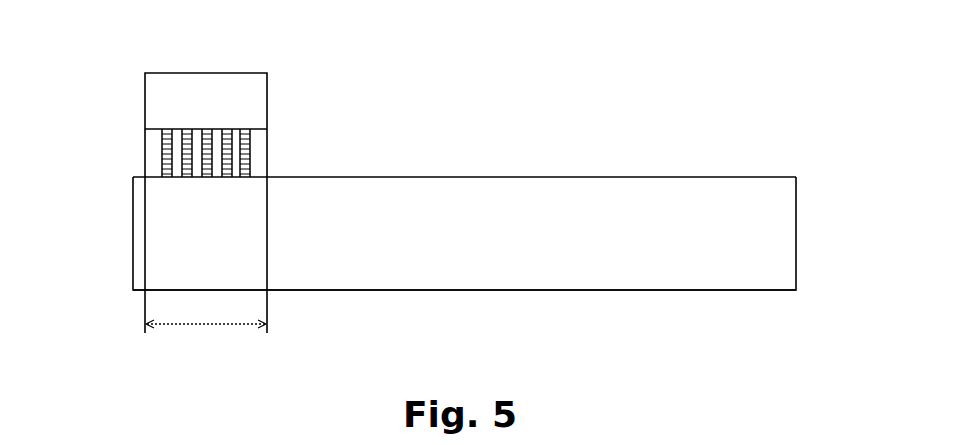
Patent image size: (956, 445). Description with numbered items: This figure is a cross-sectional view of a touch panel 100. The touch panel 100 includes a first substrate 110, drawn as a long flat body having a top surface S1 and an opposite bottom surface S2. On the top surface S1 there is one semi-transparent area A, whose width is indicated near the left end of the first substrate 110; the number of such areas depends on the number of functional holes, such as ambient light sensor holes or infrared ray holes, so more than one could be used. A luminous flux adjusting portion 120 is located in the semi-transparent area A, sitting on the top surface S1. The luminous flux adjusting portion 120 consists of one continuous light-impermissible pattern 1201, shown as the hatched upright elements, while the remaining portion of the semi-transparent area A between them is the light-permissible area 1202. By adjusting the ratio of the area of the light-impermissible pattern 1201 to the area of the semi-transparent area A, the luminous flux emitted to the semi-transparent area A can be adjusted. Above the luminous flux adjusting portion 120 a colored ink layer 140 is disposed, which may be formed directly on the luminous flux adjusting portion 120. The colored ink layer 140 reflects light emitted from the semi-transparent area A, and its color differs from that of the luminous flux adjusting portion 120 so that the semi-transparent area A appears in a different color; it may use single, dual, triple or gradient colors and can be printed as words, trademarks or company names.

The touch panel 100 is at (718, 96).
The first substrate 110 is at (143, 238).
The top surface S1 is at (692, 178).
The bottom surface S2 is at (692, 290).
The luminous flux adjusting portion 120 is at (346, 128).
The light-impermissible pattern 1201 is at (252, 173).
The light-permissible area 1202 is at (254, 143).
The colored ink layer 140 is at (160, 107).
The semi-transparent area A is at (206, 310).